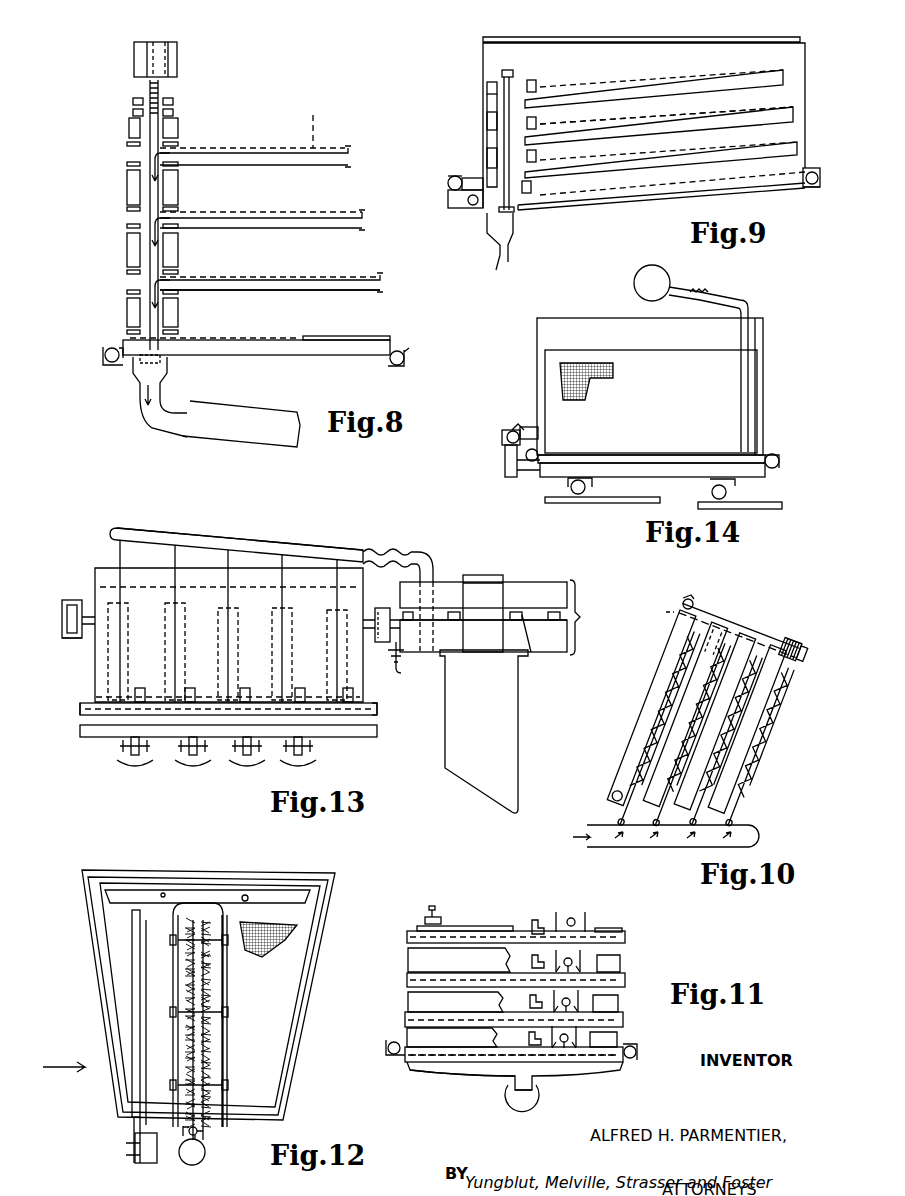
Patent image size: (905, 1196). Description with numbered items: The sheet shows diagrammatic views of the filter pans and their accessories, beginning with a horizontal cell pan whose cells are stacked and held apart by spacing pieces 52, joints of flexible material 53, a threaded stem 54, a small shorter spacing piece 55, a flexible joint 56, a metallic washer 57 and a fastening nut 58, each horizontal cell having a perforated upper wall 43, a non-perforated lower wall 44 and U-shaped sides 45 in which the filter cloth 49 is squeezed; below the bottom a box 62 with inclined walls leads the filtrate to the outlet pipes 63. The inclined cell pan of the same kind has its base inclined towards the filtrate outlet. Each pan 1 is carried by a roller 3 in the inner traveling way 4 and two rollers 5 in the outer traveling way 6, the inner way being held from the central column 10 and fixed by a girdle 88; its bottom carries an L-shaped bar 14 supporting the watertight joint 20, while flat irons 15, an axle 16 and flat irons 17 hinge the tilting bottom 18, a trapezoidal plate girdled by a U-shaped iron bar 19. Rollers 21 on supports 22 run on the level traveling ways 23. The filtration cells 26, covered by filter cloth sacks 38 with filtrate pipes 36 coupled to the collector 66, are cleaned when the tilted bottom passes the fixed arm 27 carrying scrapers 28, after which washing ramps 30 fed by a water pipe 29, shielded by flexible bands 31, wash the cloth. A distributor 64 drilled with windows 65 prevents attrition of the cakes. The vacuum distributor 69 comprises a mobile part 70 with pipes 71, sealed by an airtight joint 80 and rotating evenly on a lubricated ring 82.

In FIG. 9, the housing 1 is at (610, 55).
In FIG. 14, the housing 1 is at (545, 318).
In FIG. 13, the housing 1 is at (100, 568).
In FIG. 13, the roller 3 is at (380, 612).
In FIG. 13, the traveling way 4 is at (388, 610).
In FIG. 13, the rollers 5 is at (62, 613).
In FIG. 13, the outer traveling way 6 is at (62, 638).
In FIG. 13, the central column 10 is at (492, 732).
In FIG. 9, the L-shaped bar 14 is at (806, 170).
In FIG. 14, the L-shaped bar 14 is at (770, 472).
In FIG. 9, the flat irons 15 is at (470, 178).
In FIG. 14, the flat irons 15 is at (533, 427).
In FIG. 13, the flat irons 15 is at (150, 688).
In FIG. 9, the axle 16 is at (448, 181).
In FIG. 14, the axle 16 is at (505, 442).
In FIG. 13, the axle 16 is at (125, 700).
In FIG. 9, the flat irons 17 is at (456, 210).
In FIG. 14, the flat irons 17 is at (508, 472).
In FIG. 13, the flat irons 17 is at (130, 710).
In FIG. 8, the pan tilting bottom 18 is at (313, 356).
In FIG. 9, the pan tilting bottom 18 is at (672, 200).
In FIG. 14, the pan tilting bottom 18 is at (672, 478).
In FIG. 13, the pan tilting bottom 18 is at (358, 740).
In FIG. 10, the pan tilting bottom 18 is at (660, 657).
In FIG. 11, the pan tilting bottom 18 is at (500, 1062).
In FIG. 8, the U-shaped iron bar 19 is at (104, 360).
In FIG. 9, the U-shaped iron bar 19 is at (820, 178).
In FIG. 14, the U-shaped iron bar 19 is at (780, 455).
In FIG. 13, the U-shaped iron bar 19 is at (378, 707).
In FIG. 10, the U-shaped iron bar 19 is at (683, 600).
In FIG. 12, the U-shaped iron bar 19 is at (335, 873).
In FIG. 11, the U-shaped iron bar 19 is at (388, 1050).
In FIG. 8, the watertight joint 20 is at (110, 365).
In FIG. 9, the watertight joint 20 is at (810, 188).
In FIG. 14, the watertight joint 20 is at (781, 460).
In FIG. 13, the watertight joint 20 is at (378, 716).
In FIG. 10, the watertight joint 20 is at (682, 610).
In FIG. 12, the watertight joint 20 is at (322, 897).
In FIG. 11, the watertight joint 20 is at (395, 1056).
In FIG. 14, the rollers 21 is at (727, 497).
In FIG. 13, the rollers 21 is at (195, 760).
In FIG. 14, the supports 22 is at (764, 488).
In FIG. 13, the supports 22 is at (150, 755).
In FIG. 14, the traveling ways 23 is at (773, 509).
In FIG. 13, the traveling ways 23 is at (125, 764).
In FIG. 8, the filtration cells 26 is at (343, 345).
In FIG. 9, the filtration cells 26 is at (658, 85).
In FIG. 14, the filtration cells 26 is at (556, 351).
In FIG. 13, the filtration cells 26 is at (235, 608).
In FIG. 10, the filtration cells 26 is at (783, 662).
In FIG. 12, the filtration cells 26 is at (275, 1042).
In FIG. 11, the filtration cells 26 is at (623, 1020).
In FIG. 12, the fixed arm 27 is at (157, 1160).
In FIG. 12, the scrapers 28 is at (135, 967).
In FIG. 11, the scrapers 28 is at (538, 920).
In FIG. 10, the pipe 29 is at (760, 832).
In FIG. 12, the pipe 29 is at (205, 1152).
In FIG. 10, the washing ramps 30 is at (715, 768).
In FIG. 12, the washing ramps 30 is at (203, 1133).
In FIG. 11, the washing ramps 30 is at (574, 918).
In FIG. 12, the bands of flexible material 31 is at (223, 1074).
In FIG. 11, the bands of flexible material 31 is at (588, 926).
In FIG. 14, the pipes 36 is at (750, 308).
In FIG. 13, the pipes 36 is at (172, 557).
In FIG. 14, the filter cloth sack 38 is at (562, 378).
In FIG. 8, the perforated upper wall 43 is at (270, 187).
In FIG. 9, the perforated upper wall 43 is at (730, 70).
In FIG. 8, the non-perforated lower wall 44 is at (320, 166).
In FIG. 9, the non-perforated lower wall 44 is at (750, 87).
In FIG. 8, the sides 45 is at (351, 156).
In FIG. 8, the filter cloth 49 is at (360, 338).
In FIG. 12, the filter cloth 49 is at (272, 1000).
In FIG. 8, the spacing pieces 52 is at (127, 190).
In FIG. 9, the spacing pieces 52 is at (487, 121).
In FIG. 10, the spacing pieces 52 is at (770, 660).
In FIG. 12, the spacing pieces 52 is at (312, 902).
In FIG. 11, the spacing pieces 52 is at (620, 966).
In FIG. 8, the joints of flexible material 53 is at (125, 164).
In FIG. 9, the joints of flexible material 53 is at (487, 90).
In FIG. 8, the threaded stem 54 is at (160, 86).
In FIG. 9, the threaded stem 54 is at (509, 188).
In FIG. 10, the threaded stem 54 is at (808, 657).
In FIG. 12, the threaded stem 54 is at (247, 896).
In FIG. 11, the threaded stem 54 is at (436, 915).
In FIG. 8, the small shorter spacing piece 55 is at (178, 128).
In FIG. 10, the small shorter spacing piece 55 is at (800, 650).
In FIG. 11, the small shorter spacing piece 55 is at (623, 931).
In FIG. 8, the flexible joint 56 is at (174, 113).
In FIG. 8, the metallic washer 57 is at (174, 101).
In FIG. 8, the fastening nut 58 is at (178, 53).
In FIG. 10, the fastening nut 58 is at (806, 665).
In FIG. 11, the fastening nut 58 is at (442, 920).
In FIG. 8, the box 62 is at (133, 380).
In FIG. 9, the box 62 is at (490, 220).
In FIG. 11, the box 62 is at (452, 1070).
In FIG. 8, the filtrate outlet pipes 63 is at (140, 393).
In FIG. 9, the filtrate outlet pipes 63 is at (497, 252).
In FIG. 11, the filtrate outlet pipes 63 is at (522, 1100).
In FIG. 13, the distributor 64 is at (178, 590).
In FIG. 13, the windows 65 is at (200, 585).
In FIG. 8, the collector 66 is at (280, 434).
In FIG. 14, the collector 66 is at (642, 279).
In FIG. 13, the collector 66 is at (250, 540).
In FIG. 11, the collector 66 is at (540, 1095).
In FIG. 13, the assembly 69 is at (586, 617).
In FIG. 13, the mobile part 70 is at (532, 595).
In FIG. 13, the pipes 71 is at (430, 572).
In FIG. 13, the airtight joint 80 is at (524, 620).
In FIG. 13, the lubricated ring 82 is at (505, 583).
In FIG. 13, the girdle 88 is at (402, 668).